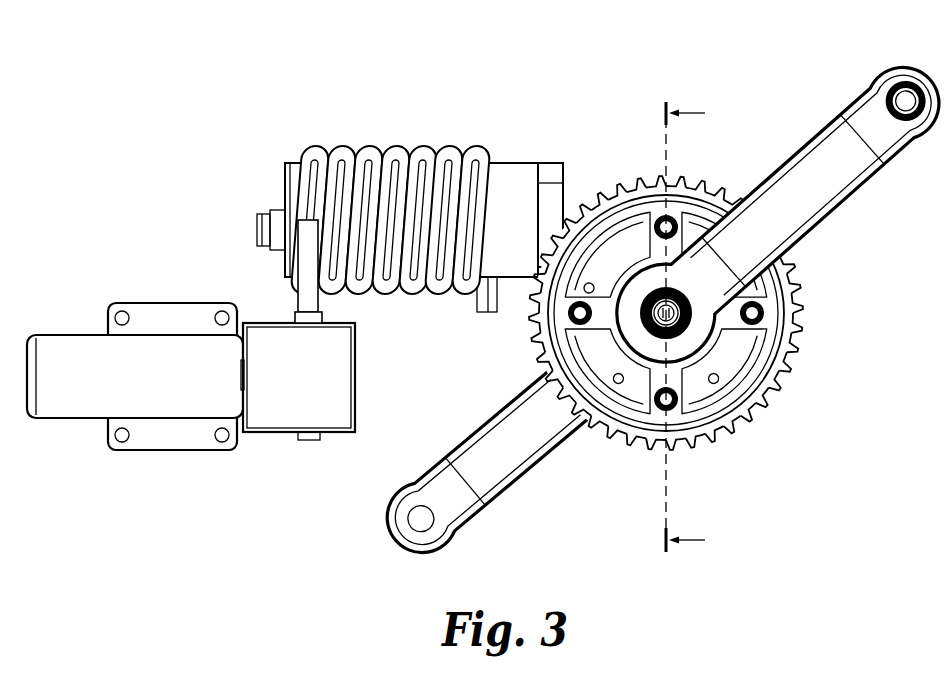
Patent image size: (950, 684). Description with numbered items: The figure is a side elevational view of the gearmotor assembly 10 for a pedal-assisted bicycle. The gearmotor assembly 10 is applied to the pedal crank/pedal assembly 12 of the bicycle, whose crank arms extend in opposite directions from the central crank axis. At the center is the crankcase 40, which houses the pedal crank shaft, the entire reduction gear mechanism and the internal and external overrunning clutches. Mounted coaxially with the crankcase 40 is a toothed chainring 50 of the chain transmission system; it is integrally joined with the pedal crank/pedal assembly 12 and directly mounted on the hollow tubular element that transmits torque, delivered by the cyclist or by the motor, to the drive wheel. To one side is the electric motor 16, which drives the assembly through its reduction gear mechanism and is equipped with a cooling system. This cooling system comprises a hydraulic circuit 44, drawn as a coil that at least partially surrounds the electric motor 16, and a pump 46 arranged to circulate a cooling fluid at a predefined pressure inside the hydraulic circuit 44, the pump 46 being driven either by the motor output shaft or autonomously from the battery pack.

The gearmotor assembly 10 is at (488, 292).
The pedal crank/pedal assembly 12 is at (858, 199).
The electric motor 16 is at (509, 196).
The crankcase 40 is at (718, 183).
The hydraulic circuit 44 is at (344, 145).
The pump 46 is at (278, 397).
The toothed chainring 50 is at (778, 382).